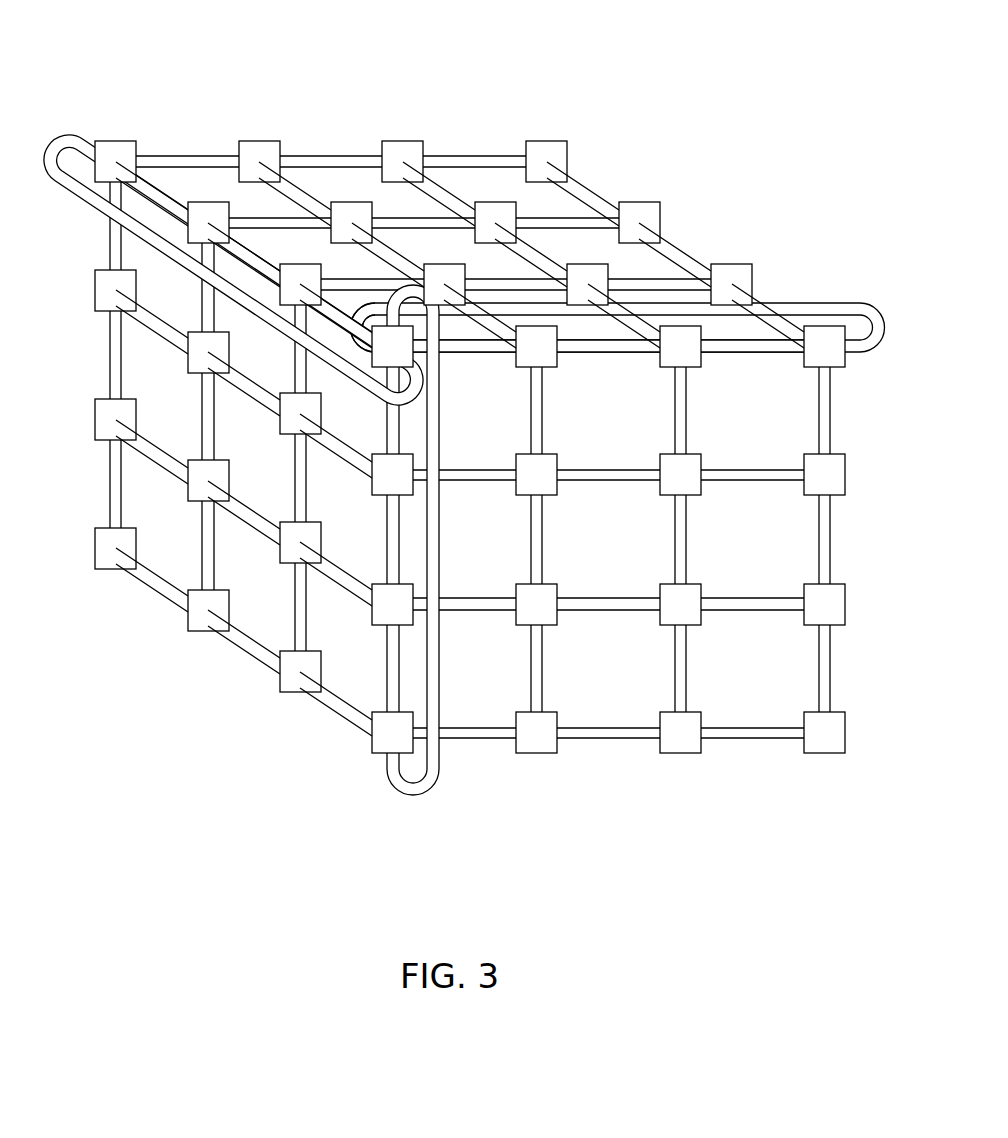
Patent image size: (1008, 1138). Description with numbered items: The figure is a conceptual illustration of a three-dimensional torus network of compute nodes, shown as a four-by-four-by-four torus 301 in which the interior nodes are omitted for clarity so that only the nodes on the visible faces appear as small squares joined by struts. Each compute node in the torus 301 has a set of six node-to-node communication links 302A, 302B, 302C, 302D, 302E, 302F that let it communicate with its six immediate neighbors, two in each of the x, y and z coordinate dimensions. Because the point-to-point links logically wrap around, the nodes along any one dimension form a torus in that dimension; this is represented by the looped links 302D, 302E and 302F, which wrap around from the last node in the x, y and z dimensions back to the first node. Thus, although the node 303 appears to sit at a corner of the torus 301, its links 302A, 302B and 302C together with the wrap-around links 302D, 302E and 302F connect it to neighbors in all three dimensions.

The torus 301 is at (614, 66).
The node-to-node communication link 302A is at (460, 353).
The node-to-node communication link 302B is at (401, 433).
The node-to-node communication link 302C is at (354, 312).
The wrap-around node-to-node communication link 302D is at (862, 302).
The wrap-around node-to-node communication link 302E is at (411, 794).
The wrap-around node-to-node communication link 302F is at (50, 136).
The node 303 is at (383, 348).